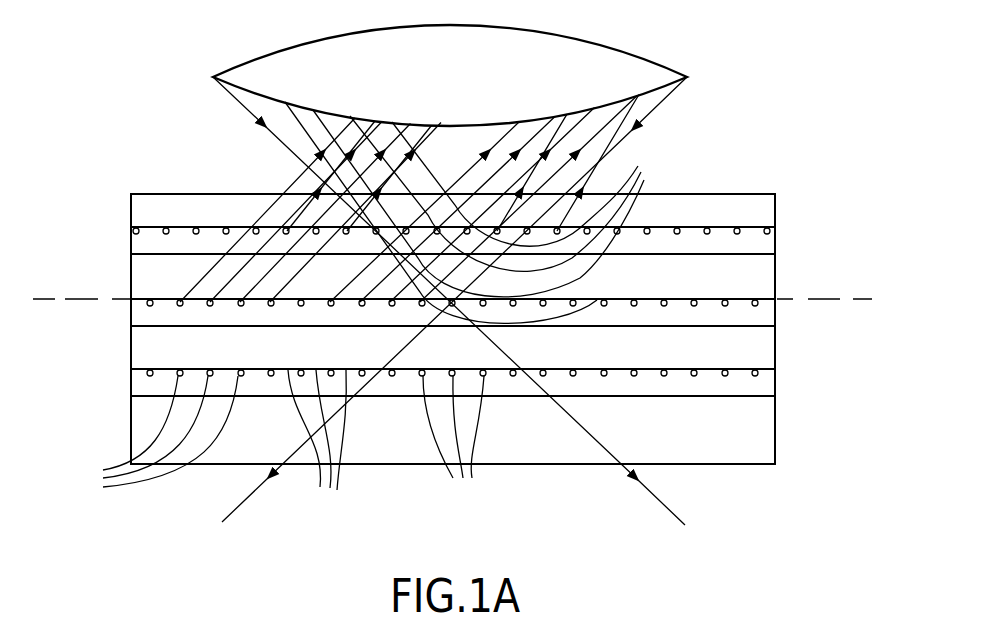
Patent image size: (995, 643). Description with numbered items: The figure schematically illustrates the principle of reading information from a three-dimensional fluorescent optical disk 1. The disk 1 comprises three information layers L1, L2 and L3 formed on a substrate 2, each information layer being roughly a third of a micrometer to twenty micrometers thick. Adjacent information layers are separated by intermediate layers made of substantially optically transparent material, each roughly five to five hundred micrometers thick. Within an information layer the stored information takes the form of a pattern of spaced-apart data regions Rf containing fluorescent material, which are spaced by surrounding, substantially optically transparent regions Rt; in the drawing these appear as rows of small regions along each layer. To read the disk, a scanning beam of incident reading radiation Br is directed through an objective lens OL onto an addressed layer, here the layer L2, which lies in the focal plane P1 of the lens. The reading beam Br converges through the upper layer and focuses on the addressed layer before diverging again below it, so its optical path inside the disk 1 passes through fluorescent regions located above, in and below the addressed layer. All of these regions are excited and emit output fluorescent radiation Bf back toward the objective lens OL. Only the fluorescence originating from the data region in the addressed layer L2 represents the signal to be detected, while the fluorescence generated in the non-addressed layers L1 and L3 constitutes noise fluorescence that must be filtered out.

The three-dimensional optical disk 1 is at (117, 180).
The substrate 2 is at (740, 435).
The objective lens OL is at (602, 45).
The first information layer L1 is at (140, 243).
The second information layer L2 is at (145, 312).
The third information layer L3 is at (145, 380).
The focal plane P1 is at (825, 299).
The scanning beam of incident radiation Br is at (663, 88).
The output fluorescent radiation Bf is at (348, 133).
The fluorescent data regions Rf is at (151, 436).
The optically transparent regions Rt is at (317, 449).